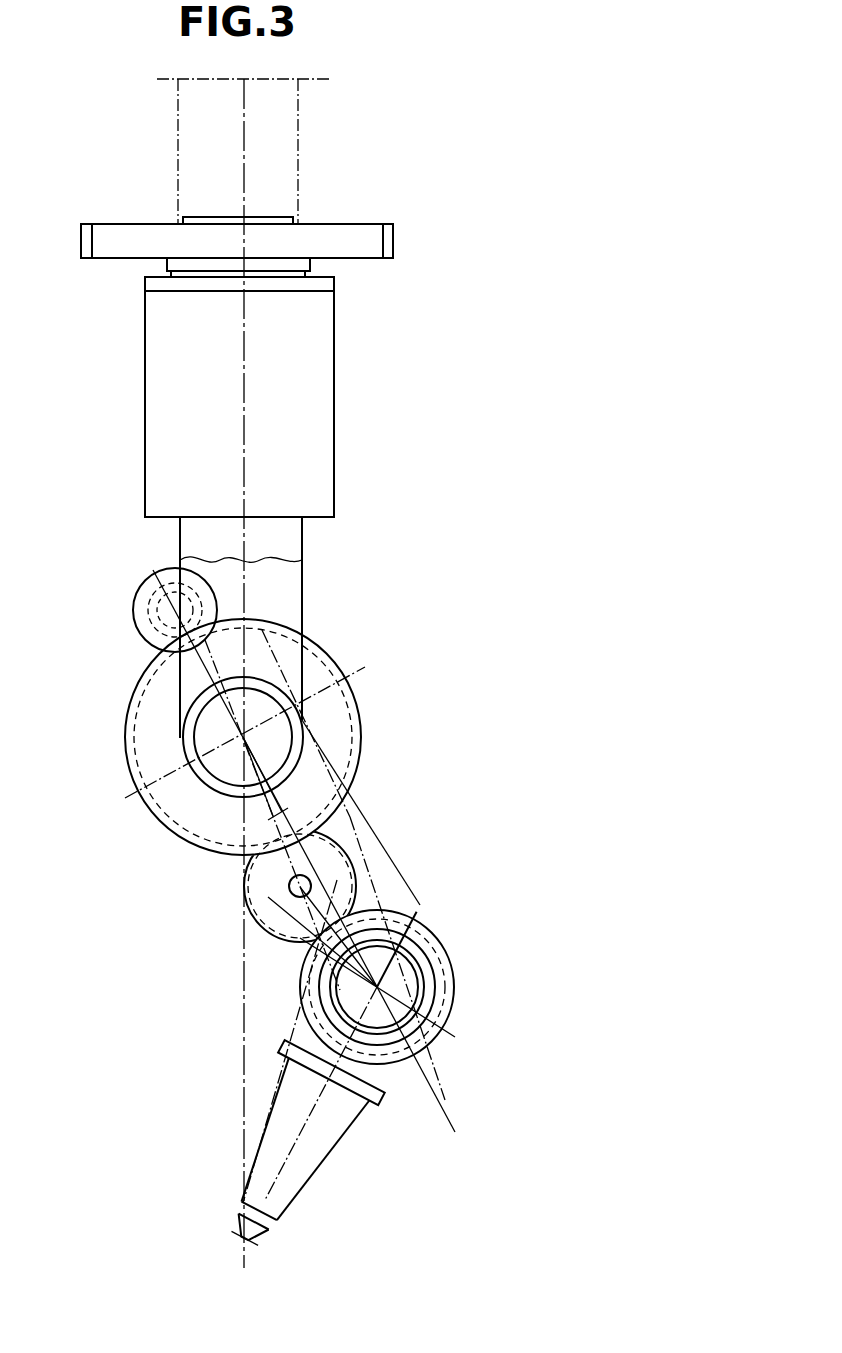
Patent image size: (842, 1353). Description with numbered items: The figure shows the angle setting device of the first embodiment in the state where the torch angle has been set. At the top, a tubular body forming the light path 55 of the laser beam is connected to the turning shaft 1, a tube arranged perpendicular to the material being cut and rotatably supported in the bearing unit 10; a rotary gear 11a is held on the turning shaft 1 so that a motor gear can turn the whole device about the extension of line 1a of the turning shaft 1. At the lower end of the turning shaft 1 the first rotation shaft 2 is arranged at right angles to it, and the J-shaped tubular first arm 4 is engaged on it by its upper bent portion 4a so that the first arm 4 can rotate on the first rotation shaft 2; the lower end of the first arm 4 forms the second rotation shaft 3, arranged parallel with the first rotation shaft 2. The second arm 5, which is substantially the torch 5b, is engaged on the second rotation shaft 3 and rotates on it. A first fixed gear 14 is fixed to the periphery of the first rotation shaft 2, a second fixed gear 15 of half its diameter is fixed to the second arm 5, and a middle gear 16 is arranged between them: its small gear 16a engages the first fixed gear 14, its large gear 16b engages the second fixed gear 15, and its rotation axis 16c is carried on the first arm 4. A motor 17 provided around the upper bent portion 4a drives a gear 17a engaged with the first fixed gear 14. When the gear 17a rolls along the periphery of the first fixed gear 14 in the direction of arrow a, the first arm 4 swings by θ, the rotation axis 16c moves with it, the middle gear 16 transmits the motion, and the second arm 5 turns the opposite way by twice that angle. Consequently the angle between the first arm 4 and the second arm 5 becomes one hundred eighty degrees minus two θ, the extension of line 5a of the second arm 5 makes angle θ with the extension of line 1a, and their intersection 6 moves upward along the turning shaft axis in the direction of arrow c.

The turning shaft 1 is at (288, 540).
The extension of line of the turning shaft 1a is at (244, 450).
The first rotation shaft 2 is at (303, 737).
The second rotation shaft 3 is at (452, 1005).
The first arm 4 is at (335, 812).
The upper bent portion 4a is at (265, 778).
The second arm 5 is at (328, 1076).
The extension of line of the second arm 5a is at (265, 1138).
The torch 5b is at (300, 1177).
The intersection 6 is at (235, 1238).
The bearing unit 10 is at (322, 365).
The rotary gear 11a is at (377, 242).
The first fixed gear 14 is at (318, 640).
The second fixed gear 15 is at (455, 975).
The middle gear 16 is at (309, 815).
The small gear 16a is at (300, 838).
The large gear 16b is at (252, 936).
The rotation axis 16c is at (312, 885).
The motor 17 is at (143, 590).
The gear 17a is at (150, 612).
The light path 55 is at (282, 148).